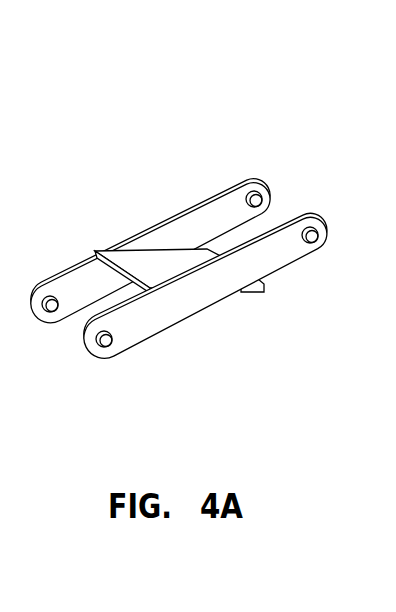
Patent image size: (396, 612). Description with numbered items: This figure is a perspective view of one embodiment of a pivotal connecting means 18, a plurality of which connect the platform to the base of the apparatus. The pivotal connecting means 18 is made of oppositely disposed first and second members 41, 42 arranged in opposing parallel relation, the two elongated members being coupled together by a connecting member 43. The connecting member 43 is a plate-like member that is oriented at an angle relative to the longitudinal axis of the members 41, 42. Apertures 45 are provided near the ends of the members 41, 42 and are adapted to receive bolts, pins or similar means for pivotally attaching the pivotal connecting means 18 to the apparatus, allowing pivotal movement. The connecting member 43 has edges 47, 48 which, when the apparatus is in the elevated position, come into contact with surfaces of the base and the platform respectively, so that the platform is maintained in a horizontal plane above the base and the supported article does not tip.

The pivotal connecting means 18 is at (125, 113).
The first member 41 is at (190, 300).
The second member 42 is at (212, 222).
The connecting member 43 is at (156, 263).
The apertures 45 is at (268, 197).
The edge 47 is at (263, 289).
The edge 48 is at (95, 251).